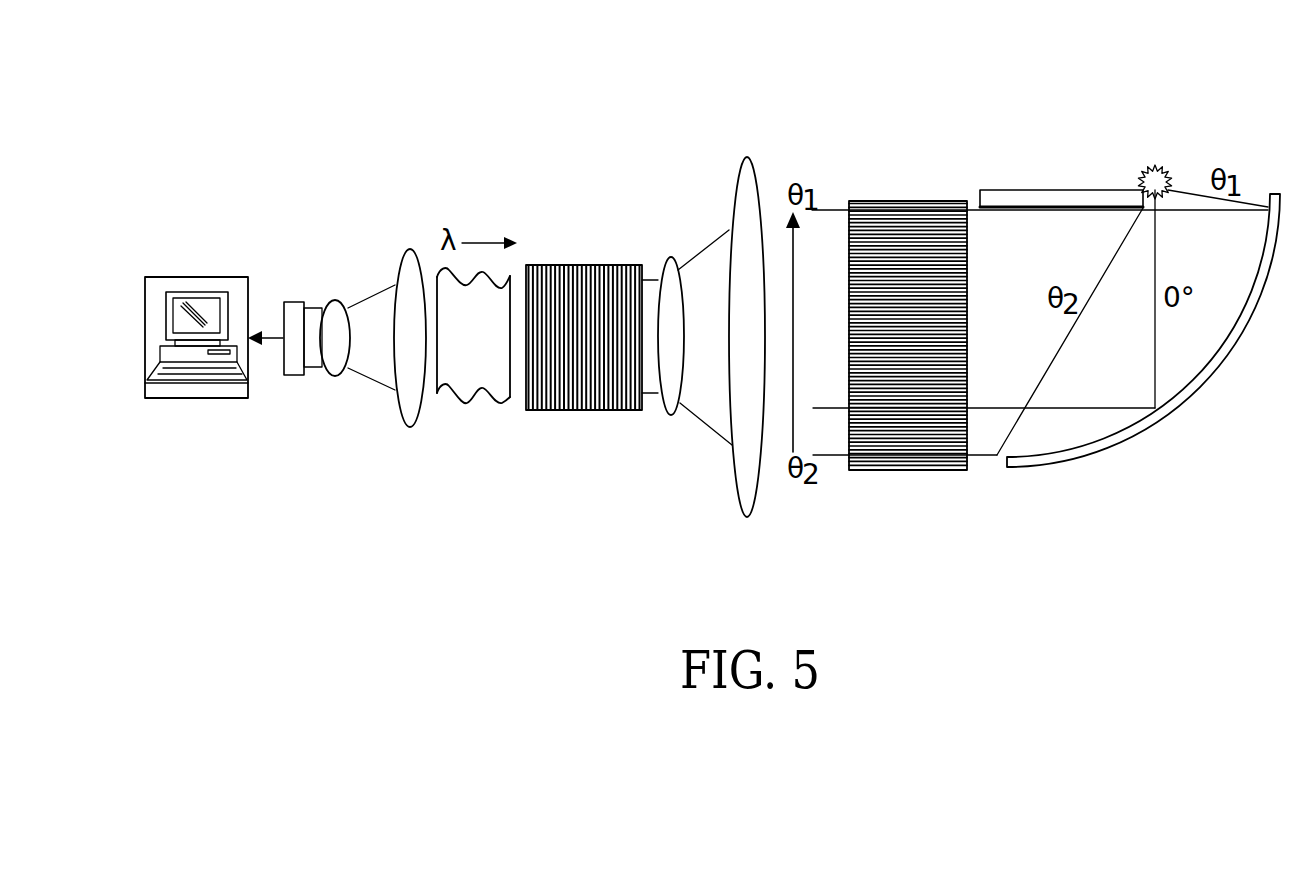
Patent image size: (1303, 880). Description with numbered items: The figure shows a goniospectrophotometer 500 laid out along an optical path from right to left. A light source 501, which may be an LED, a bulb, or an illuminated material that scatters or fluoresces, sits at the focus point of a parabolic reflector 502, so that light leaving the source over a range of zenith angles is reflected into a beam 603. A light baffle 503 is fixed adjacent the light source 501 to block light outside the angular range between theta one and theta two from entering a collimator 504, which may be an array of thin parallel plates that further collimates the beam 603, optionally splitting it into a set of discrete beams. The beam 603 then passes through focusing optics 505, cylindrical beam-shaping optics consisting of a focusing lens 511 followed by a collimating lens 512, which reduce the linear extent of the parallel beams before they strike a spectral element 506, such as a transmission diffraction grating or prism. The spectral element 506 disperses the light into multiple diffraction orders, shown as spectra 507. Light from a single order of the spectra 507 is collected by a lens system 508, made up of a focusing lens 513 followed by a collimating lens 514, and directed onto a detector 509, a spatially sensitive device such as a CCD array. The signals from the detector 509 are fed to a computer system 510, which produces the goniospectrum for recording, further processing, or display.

The goniospectrophotometer 500 is at (514, 88).
The light source 501 is at (1147, 170).
The parabolic reflector 502 is at (1128, 432).
The light baffle 503 is at (1018, 190).
The collimator 504 is at (892, 472).
The focusing optics 505 is at (697, 437).
The spectral element 506 is at (582, 411).
The spectra 507 is at (470, 404).
The lens system 508 is at (365, 396).
The detector 509 is at (295, 376).
The computer system 510 is at (192, 399).
The focusing lens 511 is at (747, 157).
The collimating lens 512 is at (672, 257).
The focusing lens 513 is at (410, 249).
The collimating lens 514 is at (335, 300).
The beam 603 is at (827, 460).